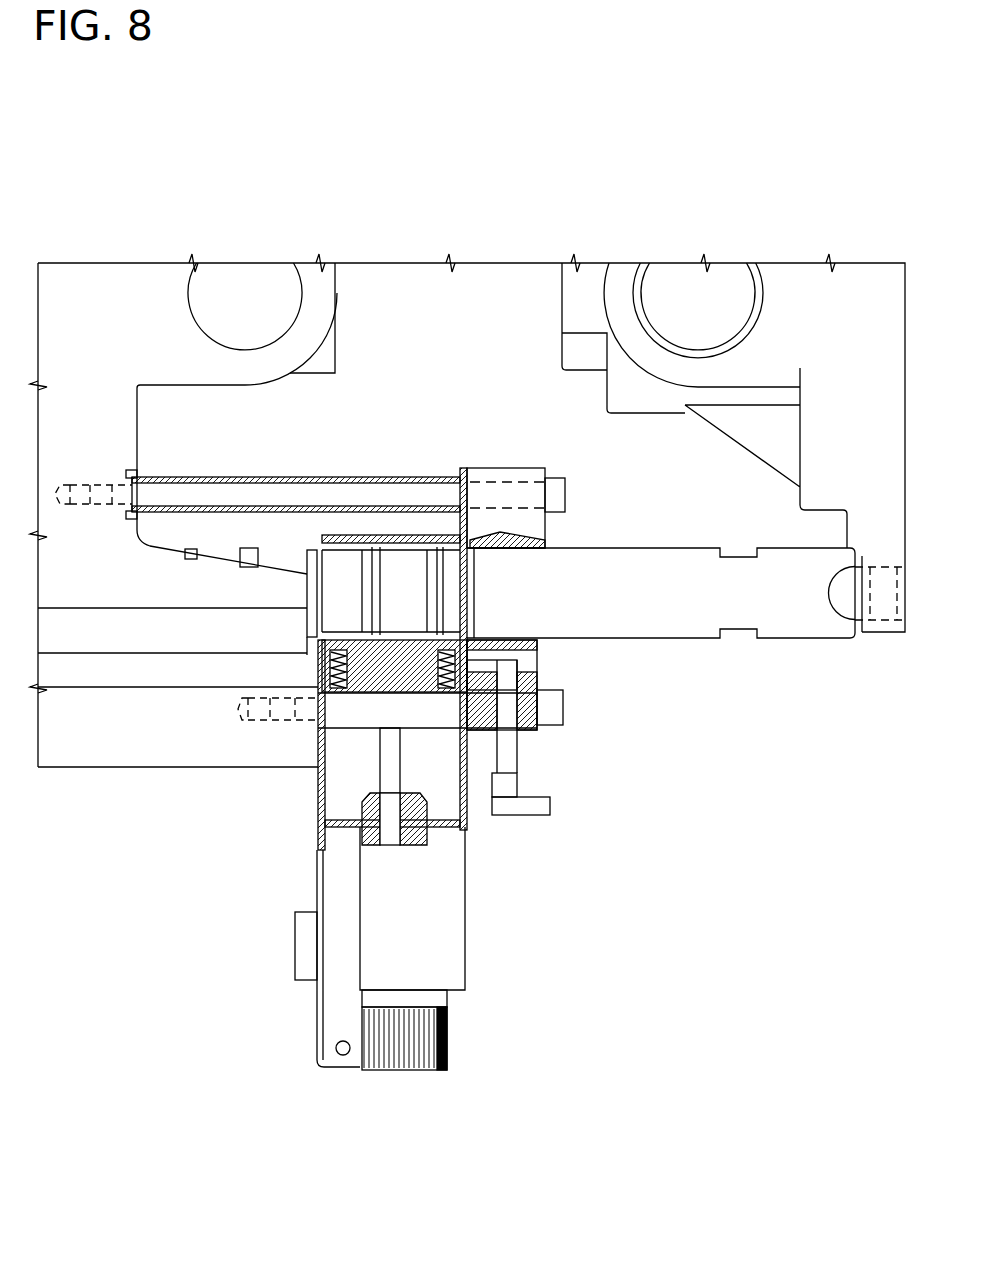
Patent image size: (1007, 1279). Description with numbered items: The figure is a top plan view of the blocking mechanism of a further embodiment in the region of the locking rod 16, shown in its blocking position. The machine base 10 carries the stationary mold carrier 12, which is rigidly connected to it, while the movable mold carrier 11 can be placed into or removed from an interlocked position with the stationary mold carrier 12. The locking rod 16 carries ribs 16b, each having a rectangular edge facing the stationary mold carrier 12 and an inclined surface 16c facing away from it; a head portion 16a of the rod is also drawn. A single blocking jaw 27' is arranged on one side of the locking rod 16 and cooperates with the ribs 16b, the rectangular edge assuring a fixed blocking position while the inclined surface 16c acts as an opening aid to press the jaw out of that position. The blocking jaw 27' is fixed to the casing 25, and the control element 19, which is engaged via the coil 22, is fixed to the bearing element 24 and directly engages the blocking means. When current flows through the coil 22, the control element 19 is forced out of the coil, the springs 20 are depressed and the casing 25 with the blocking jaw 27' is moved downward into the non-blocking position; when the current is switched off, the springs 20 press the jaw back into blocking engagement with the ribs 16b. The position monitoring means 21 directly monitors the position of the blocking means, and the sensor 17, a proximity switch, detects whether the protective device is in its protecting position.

The machine base 10 is at (460, 468).
The movable mold carrier 11 is at (858, 340).
The stationary mold carrier 12 is at (125, 340).
The locking rod 16 is at (686, 565).
The shaft head block 16a is at (571, 492).
The ribs 16b is at (391, 530).
The inclined surface 16c is at (257, 494).
The sensor 17 is at (578, 737).
The control element 19 is at (296, 764).
The springs 20 is at (305, 669).
The position monitoring means 21 is at (493, 685).
The coil 22 is at (495, 827).
The bearing element 24 is at (451, 719).
The casing 25 is at (326, 638).
The blocking jaw 27' is at (501, 618).